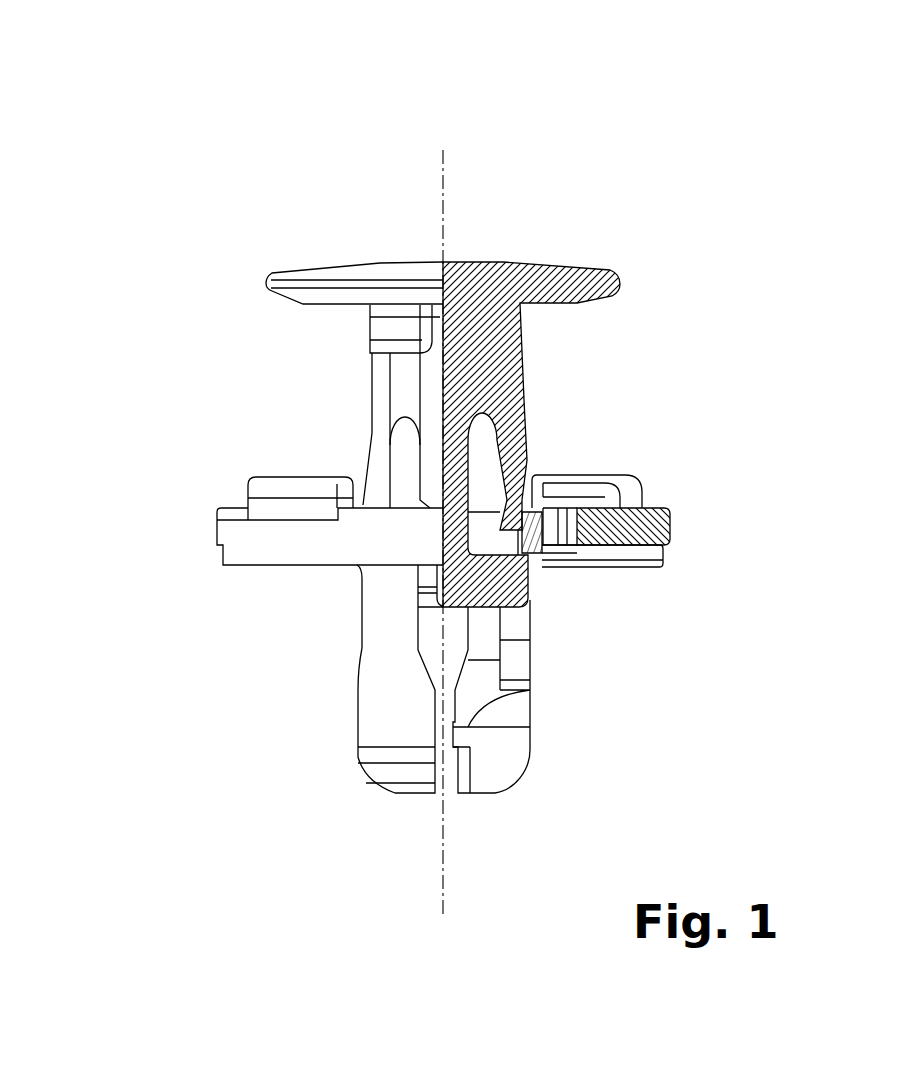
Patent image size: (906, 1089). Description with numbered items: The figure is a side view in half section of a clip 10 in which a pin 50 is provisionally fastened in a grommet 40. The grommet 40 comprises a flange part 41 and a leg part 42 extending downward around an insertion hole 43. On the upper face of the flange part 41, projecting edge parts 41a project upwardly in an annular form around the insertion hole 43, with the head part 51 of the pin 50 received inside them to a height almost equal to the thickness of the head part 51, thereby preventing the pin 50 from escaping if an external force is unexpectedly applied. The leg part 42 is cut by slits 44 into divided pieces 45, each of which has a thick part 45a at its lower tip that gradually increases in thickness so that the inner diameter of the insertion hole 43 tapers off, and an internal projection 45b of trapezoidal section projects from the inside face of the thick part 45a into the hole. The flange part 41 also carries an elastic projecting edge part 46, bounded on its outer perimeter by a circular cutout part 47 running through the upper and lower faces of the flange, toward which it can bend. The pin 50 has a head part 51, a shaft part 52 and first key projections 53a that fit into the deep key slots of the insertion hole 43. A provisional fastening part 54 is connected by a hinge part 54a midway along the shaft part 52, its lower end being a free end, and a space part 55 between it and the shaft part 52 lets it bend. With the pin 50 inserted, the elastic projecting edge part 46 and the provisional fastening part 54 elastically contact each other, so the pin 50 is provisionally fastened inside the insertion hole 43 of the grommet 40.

The clip 10 is at (219, 115).
The grommet 40 is at (102, 588).
The flange part 41 is at (237, 553).
The projecting edge parts 41a is at (279, 488).
The leg part 42 is at (370, 681).
The insertion hole 43 is at (510, 543).
The slits 44 is at (447, 808).
The divided pieces 45 is at (375, 725).
The thick part 45a is at (517, 752).
The internal projection 45b is at (480, 727).
The elastic projecting edge part 46 is at (663, 556).
The cutout part 47 is at (567, 508).
The pin 50 is at (112, 243).
The head part 51 is at (272, 281).
The shaft part 52 is at (373, 388).
The first key projections 53a is at (527, 590).
The provisional fastening part 54 is at (530, 468).
The hinge part 54a is at (483, 443).
The space part 55 is at (520, 425).